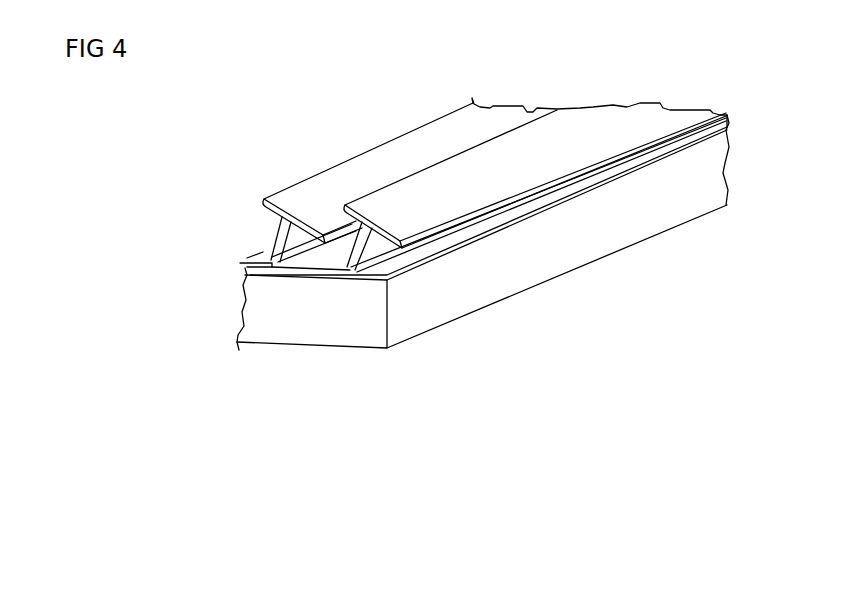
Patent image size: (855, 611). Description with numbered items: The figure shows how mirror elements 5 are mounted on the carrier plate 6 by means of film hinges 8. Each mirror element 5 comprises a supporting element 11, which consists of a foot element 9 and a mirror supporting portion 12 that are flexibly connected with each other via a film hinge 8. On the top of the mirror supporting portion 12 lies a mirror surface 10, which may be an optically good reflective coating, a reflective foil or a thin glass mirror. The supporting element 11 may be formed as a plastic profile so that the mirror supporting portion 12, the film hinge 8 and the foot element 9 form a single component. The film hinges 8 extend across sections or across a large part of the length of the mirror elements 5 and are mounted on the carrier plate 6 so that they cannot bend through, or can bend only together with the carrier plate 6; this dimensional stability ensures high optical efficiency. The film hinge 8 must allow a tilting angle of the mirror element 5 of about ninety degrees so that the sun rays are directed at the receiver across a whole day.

The mirror element 5 is at (436, 249).
The carrier plate 6 is at (322, 325).
The film hinge 8 is at (257, 264).
The foot element 9 is at (272, 259).
The mirror surface 10 is at (332, 190).
The supporting element 11 is at (263, 231).
The mirror supporting portion 12 is at (362, 240).